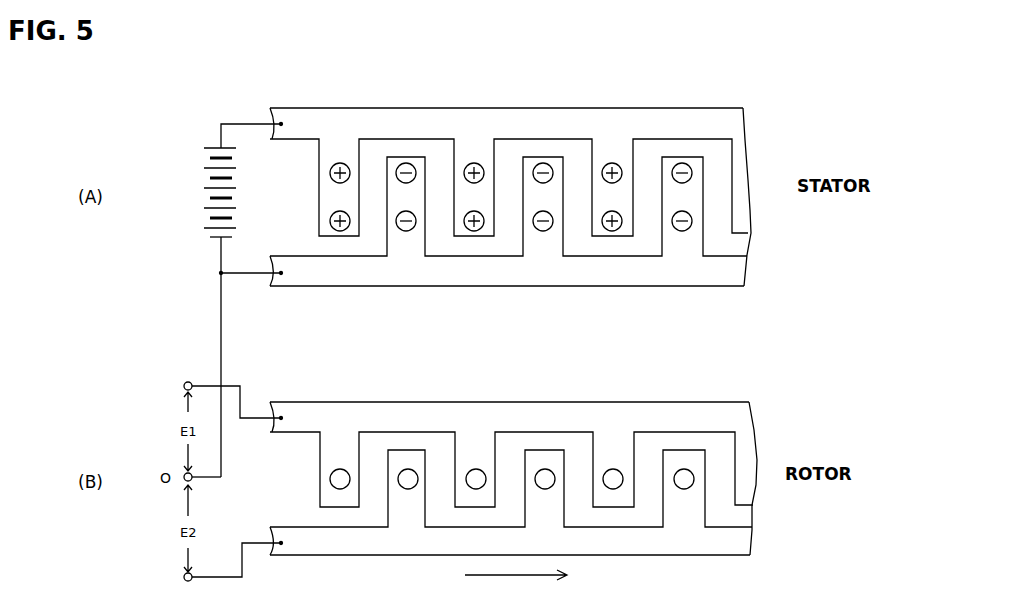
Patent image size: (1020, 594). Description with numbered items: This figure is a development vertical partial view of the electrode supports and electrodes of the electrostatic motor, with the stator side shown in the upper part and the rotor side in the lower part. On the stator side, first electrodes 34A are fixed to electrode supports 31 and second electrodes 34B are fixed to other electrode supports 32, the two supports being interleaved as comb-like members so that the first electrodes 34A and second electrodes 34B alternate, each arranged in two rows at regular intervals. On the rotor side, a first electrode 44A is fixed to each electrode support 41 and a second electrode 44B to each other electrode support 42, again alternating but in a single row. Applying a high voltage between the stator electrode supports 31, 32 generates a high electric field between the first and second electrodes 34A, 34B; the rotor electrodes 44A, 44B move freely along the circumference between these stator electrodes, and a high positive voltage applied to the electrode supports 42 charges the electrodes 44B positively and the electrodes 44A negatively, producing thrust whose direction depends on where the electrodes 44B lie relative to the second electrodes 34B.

The electrode support 31 is at (542, 273).
The electrode support 32 is at (613, 121).
The first electrode 34A is at (543, 214).
The second electrode 34B is at (342, 216).
The electrode support 41 is at (365, 543).
The electrode support 42 is at (560, 415).
The first electrode 44A is at (410, 472).
The second electrode 44B is at (341, 472).